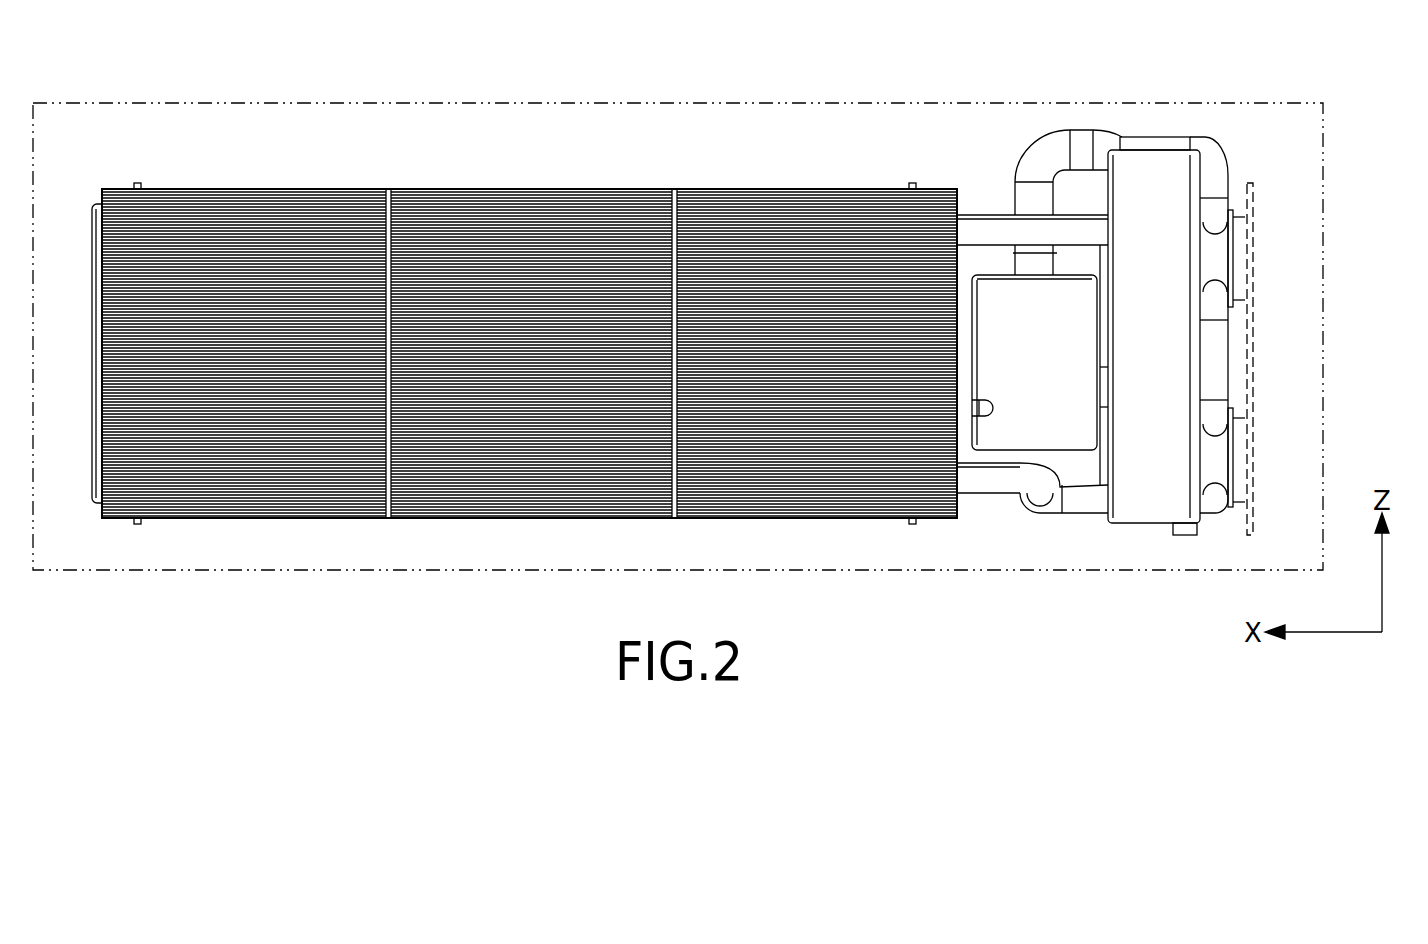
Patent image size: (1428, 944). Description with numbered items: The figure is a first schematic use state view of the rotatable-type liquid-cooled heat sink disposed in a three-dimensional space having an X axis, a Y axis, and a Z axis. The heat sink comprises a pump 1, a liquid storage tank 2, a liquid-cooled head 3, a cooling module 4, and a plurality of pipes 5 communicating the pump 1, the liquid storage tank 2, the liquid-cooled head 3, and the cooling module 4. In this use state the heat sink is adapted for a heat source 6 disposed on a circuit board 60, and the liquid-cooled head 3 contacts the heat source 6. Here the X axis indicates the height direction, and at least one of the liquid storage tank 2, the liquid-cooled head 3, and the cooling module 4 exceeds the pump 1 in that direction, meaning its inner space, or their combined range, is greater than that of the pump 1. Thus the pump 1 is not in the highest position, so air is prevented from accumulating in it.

The pump 1 is at (1041, 422).
The liquid storage tank 2 is at (1157, 178).
The liquid-cooled head 3 is at (1213, 260).
The cooling module 4 is at (503, 200).
The pipes 5 is at (1042, 155).
The heat source 6 is at (1240, 234).
The circuit board 60 is at (1252, 355).